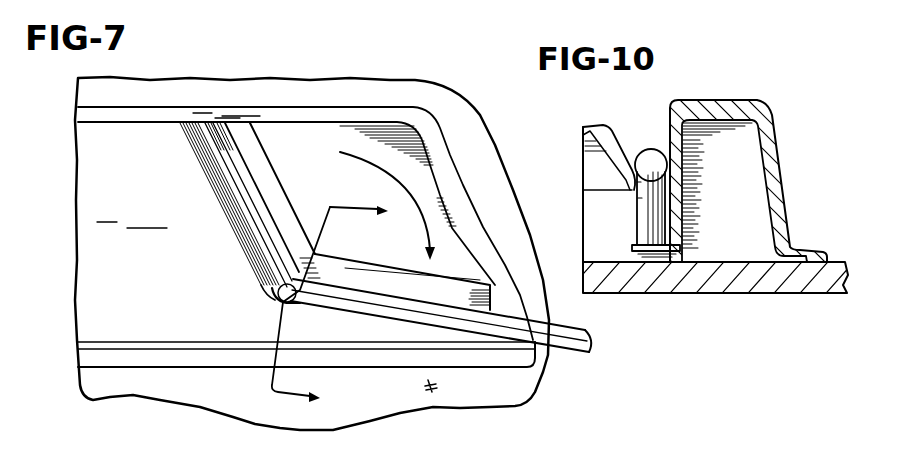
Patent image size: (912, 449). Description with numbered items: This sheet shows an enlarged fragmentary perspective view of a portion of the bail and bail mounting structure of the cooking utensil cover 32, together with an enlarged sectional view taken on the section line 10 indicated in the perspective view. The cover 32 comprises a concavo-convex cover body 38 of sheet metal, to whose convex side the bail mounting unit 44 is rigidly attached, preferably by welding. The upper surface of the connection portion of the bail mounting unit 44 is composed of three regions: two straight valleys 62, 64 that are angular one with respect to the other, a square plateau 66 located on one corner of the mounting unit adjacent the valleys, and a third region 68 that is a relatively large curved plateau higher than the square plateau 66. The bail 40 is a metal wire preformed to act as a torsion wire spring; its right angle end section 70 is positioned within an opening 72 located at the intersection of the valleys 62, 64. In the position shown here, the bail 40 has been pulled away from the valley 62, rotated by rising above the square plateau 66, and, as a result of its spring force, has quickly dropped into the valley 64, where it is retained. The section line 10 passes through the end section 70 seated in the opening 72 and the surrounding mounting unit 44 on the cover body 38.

In FIG. 7, the section view line 10 is at (342, 311).
In FIG. 7, the cooking utensil cover 32 is at (430, 78).
In FIG. 7, the cover body 38 is at (187, 78).
In FIG. 10, the cover body 38 is at (730, 296).
In FIG. 7, the bail 40 is at (586, 358).
In FIG. 10, the bail 40 is at (648, 148).
In FIG. 7, the bail mounting unit 44 is at (275, 104).
In FIG. 10, the bail mounting unit 44 is at (786, 147).
In FIG. 7, the valley 62 is at (227, 147).
In FIG. 7, the valley 64 is at (467, 302).
In FIG. 7, the plateau 66 is at (313, 174).
In FIG. 10, the plateau 66 is at (600, 126).
In FIG. 7, the third region 68 is at (173, 276).
In FIG. 10, the third region 68 is at (730, 99).
In FIG. 10, the right angle end section 70 is at (637, 222).
In FIG. 10, the opening 72 is at (620, 189).